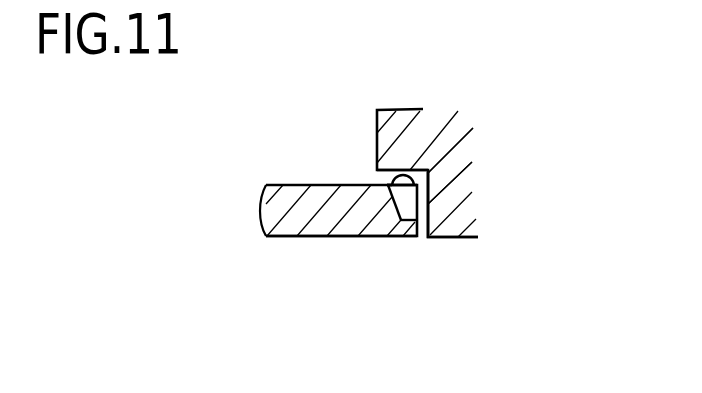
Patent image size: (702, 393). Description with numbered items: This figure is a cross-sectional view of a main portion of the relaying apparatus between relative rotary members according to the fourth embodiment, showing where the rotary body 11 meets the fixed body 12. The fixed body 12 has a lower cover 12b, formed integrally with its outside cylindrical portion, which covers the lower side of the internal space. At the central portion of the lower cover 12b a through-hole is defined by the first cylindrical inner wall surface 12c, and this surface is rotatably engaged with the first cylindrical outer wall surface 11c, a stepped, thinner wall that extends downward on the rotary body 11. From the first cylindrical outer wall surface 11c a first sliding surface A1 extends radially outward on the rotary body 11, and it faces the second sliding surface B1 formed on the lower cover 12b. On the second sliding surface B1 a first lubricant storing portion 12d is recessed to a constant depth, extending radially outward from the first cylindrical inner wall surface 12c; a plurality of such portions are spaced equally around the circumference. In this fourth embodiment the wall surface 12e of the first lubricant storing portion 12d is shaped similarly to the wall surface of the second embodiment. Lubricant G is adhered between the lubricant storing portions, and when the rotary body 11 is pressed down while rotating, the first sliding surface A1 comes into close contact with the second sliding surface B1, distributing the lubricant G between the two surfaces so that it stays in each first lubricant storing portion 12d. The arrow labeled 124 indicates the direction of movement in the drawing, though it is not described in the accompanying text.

The rotary body 11 is at (482, 245).
The first cylindrical outer wall surface 11c is at (422, 239).
The fixed body 12 is at (256, 213).
The lower cover 12b is at (312, 238).
The first cylindrical inner wall surface 12c is at (417, 188).
The first lubricant storing portion 12d is at (409, 200).
The wall surface 12e is at (401, 212).
The sealing portion 124 is at (487, 155).
The first sliding surface A1 is at (390, 183).
The lubricant G is at (402, 176).
The second sliding surface B1 is at (411, 175).